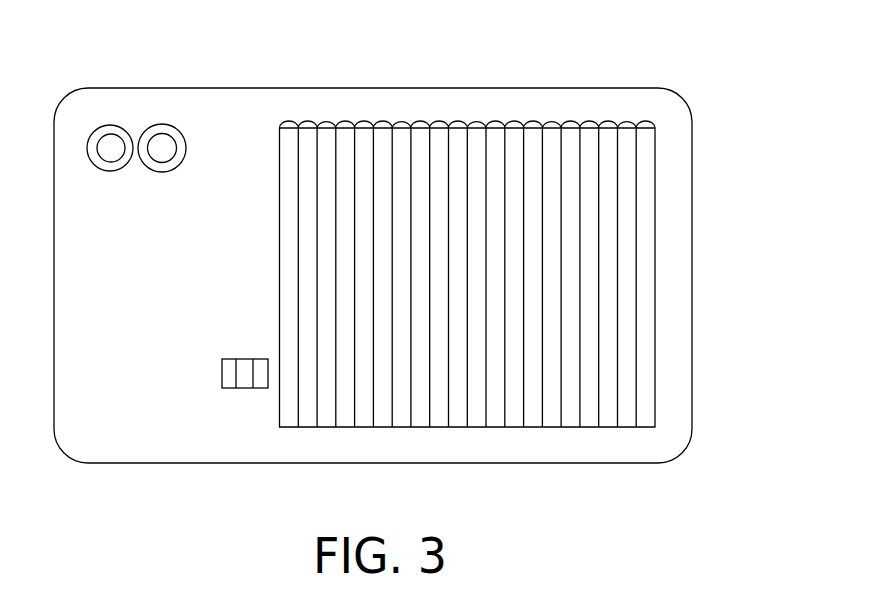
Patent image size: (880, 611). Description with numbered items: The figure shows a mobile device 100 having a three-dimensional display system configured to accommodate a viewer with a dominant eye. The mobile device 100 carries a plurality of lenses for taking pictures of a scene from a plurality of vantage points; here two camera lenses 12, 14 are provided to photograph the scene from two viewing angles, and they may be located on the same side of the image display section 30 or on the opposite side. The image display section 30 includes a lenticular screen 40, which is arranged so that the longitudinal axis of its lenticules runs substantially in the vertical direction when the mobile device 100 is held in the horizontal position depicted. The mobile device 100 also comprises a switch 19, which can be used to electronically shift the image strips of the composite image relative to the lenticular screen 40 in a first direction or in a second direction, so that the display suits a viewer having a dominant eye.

The mobile device 100 is at (641, 74).
The camera lens 12 is at (108, 170).
The camera lens 14 is at (169, 168).
The switch 19 is at (234, 359).
The image display section 30 is at (277, 313).
The lenticular screen 40 is at (643, 293).